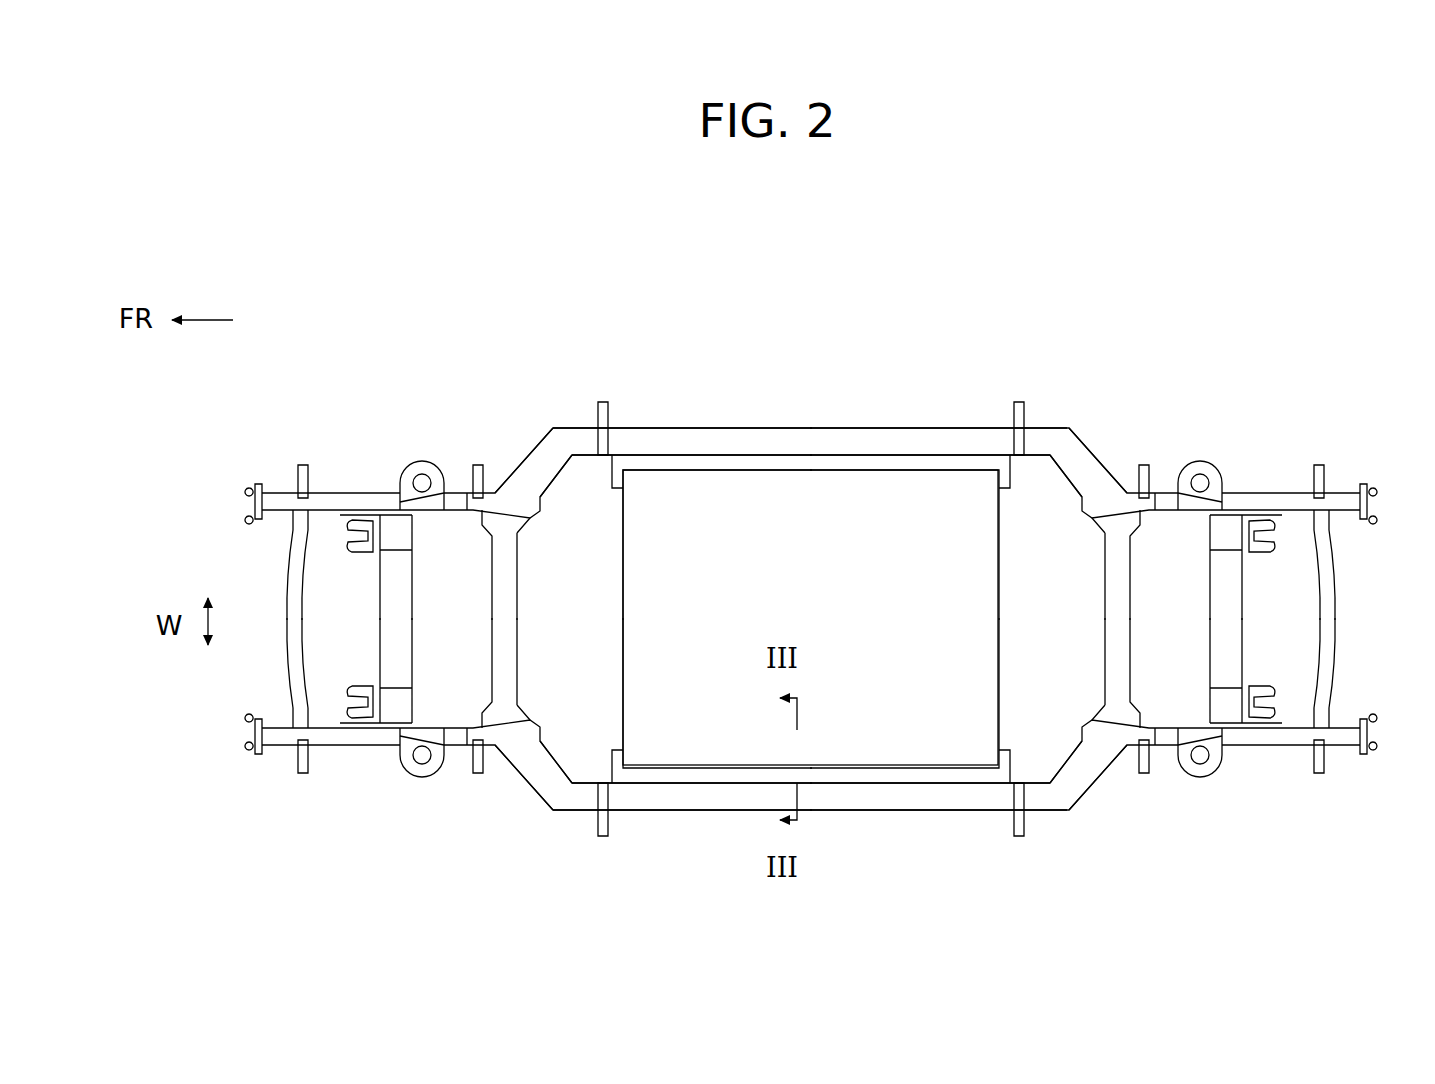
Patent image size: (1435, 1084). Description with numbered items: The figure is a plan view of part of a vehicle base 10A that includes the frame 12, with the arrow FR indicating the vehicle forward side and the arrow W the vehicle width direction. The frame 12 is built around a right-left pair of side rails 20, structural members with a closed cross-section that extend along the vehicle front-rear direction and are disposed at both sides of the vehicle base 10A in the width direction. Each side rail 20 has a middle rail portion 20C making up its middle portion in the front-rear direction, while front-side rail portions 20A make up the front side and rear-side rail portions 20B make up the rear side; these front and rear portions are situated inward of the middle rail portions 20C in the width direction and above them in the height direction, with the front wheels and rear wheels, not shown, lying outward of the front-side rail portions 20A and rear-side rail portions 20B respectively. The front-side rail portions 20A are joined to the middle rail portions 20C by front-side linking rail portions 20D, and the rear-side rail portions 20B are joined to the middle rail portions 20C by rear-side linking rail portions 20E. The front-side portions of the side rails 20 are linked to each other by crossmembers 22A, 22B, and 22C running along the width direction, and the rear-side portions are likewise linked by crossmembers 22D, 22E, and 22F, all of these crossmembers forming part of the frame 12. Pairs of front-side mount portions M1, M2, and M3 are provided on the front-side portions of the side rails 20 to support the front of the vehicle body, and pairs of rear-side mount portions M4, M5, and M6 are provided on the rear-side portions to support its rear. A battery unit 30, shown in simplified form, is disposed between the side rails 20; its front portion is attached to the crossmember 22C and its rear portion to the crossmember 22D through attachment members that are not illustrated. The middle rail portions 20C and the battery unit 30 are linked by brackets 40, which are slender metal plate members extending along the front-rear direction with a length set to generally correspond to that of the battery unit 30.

The vehicle base 10A is at (1249, 238).
The frame 12 is at (1149, 285).
The side rails 20 is at (823, 418).
The front-side rail portions 20A is at (355, 500).
The rear-side rail portions 20B is at (1258, 497).
The middle rail portion 20C is at (720, 432).
The front-side linking rail portions 20D is at (530, 465).
The rear-side linking rail portions 20E is at (1090, 455).
The crossmember 22A is at (290, 590).
The crossmember 22B is at (380, 588).
The crossmember 22C is at (493, 595).
The crossmember 22D is at (1130, 595).
The crossmember 22E is at (1243, 600).
The crossmember 22F is at (1348, 600).
The battery unit 30 is at (640, 590).
The brackets 40 is at (923, 474).
The front-side mount portion M1 is at (297, 480).
The front-side mount portion M2 is at (473, 482).
The front-side mount portion M3 is at (598, 412).
The rear-side mount portion M4 is at (1020, 412).
The rear-side mount portion M5 is at (1150, 482).
The rear-side mount portion M6 is at (1330, 482).